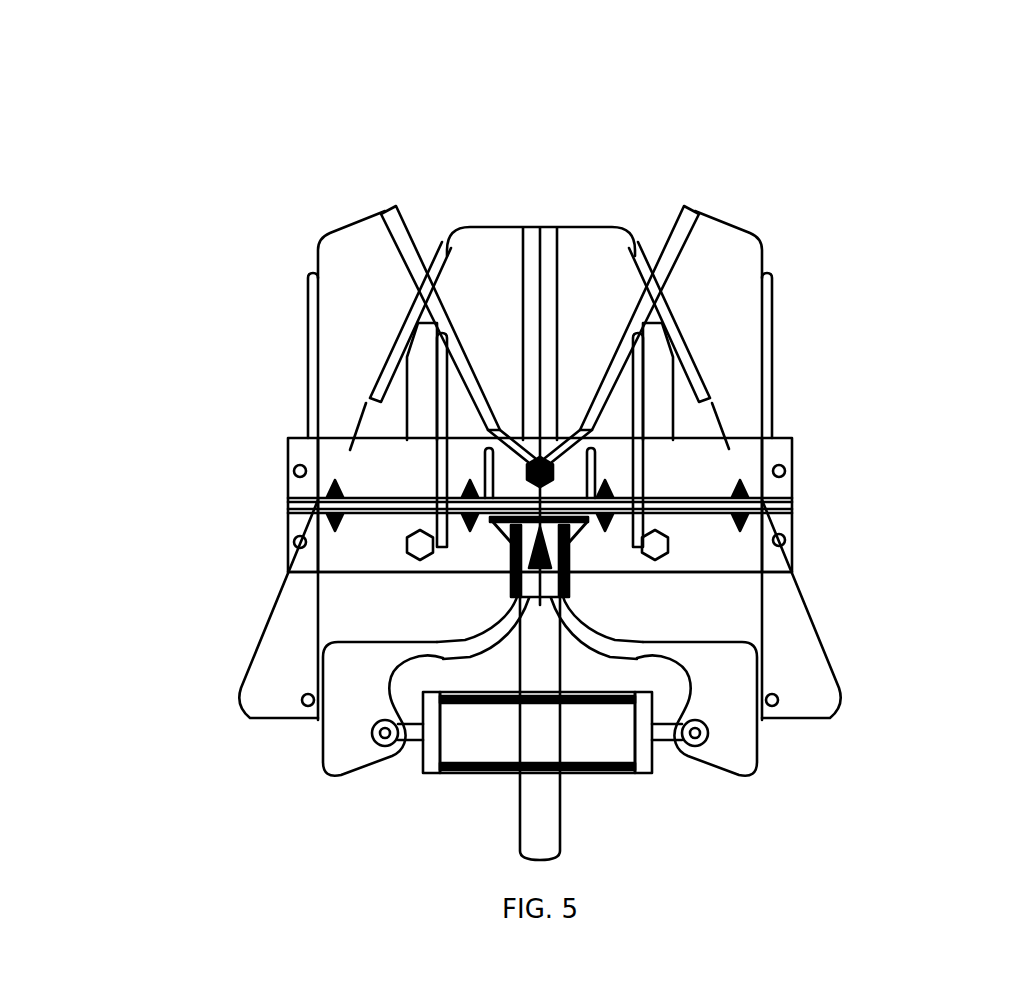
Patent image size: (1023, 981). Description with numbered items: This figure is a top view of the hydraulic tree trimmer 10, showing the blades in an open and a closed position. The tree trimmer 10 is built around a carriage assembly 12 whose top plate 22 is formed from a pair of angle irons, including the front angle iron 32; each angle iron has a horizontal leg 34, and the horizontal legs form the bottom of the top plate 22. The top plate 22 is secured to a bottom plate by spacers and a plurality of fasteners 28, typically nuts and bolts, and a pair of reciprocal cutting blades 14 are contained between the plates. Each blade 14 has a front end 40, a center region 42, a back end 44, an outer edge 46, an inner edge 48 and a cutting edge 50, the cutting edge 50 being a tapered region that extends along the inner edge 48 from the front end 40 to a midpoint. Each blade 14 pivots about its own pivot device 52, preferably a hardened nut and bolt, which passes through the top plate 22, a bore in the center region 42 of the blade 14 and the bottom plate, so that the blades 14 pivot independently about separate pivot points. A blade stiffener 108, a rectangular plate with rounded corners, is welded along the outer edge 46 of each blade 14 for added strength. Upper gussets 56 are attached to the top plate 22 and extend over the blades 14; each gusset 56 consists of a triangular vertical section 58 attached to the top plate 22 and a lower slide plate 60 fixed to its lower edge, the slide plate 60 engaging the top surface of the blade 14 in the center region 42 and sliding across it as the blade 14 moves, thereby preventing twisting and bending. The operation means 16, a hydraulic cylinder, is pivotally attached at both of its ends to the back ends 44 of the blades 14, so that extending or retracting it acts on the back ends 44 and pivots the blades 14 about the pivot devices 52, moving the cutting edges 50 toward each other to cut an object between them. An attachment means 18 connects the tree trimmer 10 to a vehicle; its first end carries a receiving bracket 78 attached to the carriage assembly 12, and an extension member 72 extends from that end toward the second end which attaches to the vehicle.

The hydraulic tree trimmer 10 is at (272, 333).
The carriage assembly 12 is at (707, 578).
The cutting blades 14 is at (633, 249).
The operation means 16 is at (478, 750).
The attachment means 18 is at (527, 647).
The top plate 22 is at (800, 488).
The fasteners 28 is at (298, 468).
The front angle iron 32 is at (815, 440).
The horizontal leg 34 is at (752, 555).
The front end 40 is at (722, 226).
The center region 42 is at (740, 405).
The back end 44 is at (325, 765).
The outer edge 46 is at (765, 247).
The inner edge 48 is at (687, 208).
The cutting edge 50 is at (418, 230).
The pivot device 52 is at (405, 548).
The upper gussets 56 is at (470, 235).
The triangular vertical section 58 is at (443, 380).
The lower slide plate 60 is at (420, 310).
The extension member 72 is at (548, 797).
The receiving bracket 78 is at (577, 608).
The blade stiffener 108 is at (305, 312).